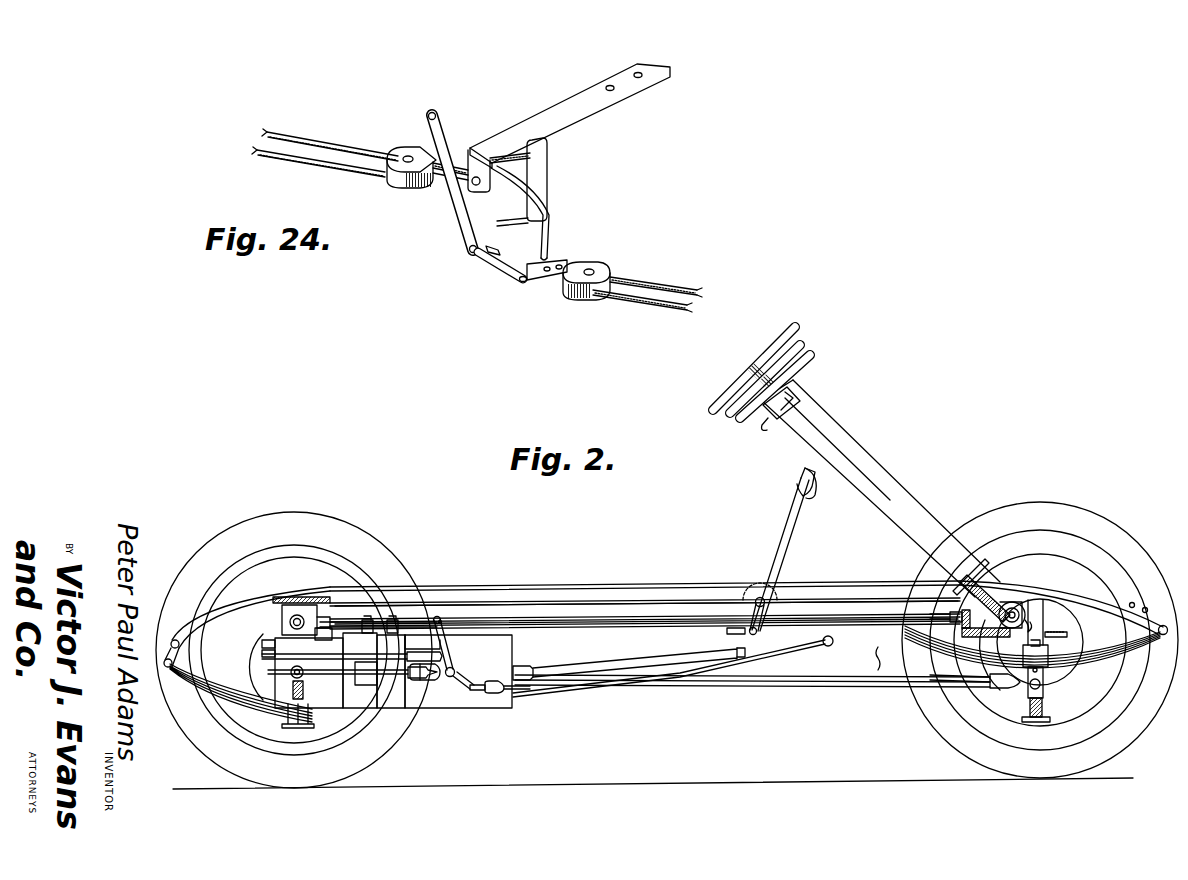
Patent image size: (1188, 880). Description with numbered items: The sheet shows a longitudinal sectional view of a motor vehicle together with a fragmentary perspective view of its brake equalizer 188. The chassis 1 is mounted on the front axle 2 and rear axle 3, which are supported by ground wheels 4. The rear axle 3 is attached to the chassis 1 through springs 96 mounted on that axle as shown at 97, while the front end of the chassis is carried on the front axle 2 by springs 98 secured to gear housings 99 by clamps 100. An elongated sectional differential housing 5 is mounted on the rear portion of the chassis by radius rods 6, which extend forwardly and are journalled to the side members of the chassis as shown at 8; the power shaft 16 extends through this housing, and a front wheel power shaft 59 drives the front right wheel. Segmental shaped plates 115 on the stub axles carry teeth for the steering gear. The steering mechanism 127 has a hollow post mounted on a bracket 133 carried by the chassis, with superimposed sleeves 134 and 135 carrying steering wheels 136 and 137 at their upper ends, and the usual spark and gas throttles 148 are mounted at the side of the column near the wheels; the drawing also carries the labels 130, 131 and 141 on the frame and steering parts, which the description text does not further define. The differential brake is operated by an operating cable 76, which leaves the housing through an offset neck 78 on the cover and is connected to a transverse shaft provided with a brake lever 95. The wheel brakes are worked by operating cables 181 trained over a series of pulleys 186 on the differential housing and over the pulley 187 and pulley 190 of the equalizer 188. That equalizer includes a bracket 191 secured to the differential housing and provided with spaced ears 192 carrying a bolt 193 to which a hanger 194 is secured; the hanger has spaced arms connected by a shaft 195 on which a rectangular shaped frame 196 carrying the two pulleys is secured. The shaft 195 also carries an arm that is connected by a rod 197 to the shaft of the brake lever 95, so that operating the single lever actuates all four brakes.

In FIG. 2, the chassis 1 is at (574, 587).
In FIG. 2, the front axle 2 is at (1044, 706).
In FIG. 2, the rear axle 3 is at (290, 688).
In FIG. 2, the ground wheels 4 is at (388, 748).
In FIG. 2, the differential housing 5 is at (478, 700).
In FIG. 2, the radius rods 6 is at (560, 694).
In FIG. 2, the journal of radius rods 8 is at (836, 646).
In FIG. 2, the power shaft 16 is at (608, 662).
In FIG. 2, the front wheel power shaft 59 is at (878, 688).
In FIG. 2, the operating cable 76 is at (834, 641).
In FIG. 2, the offset neck 78 is at (393, 619).
In FIG. 2, the brake lever 95 is at (778, 540).
In FIG. 2, the springs 96 is at (225, 708).
In FIG. 2, the spring mounting 97 is at (290, 730).
In FIG. 2, the springs 98 is at (1085, 660).
In FIG. 2, the gear housings 99 is at (1050, 691).
In FIG. 2, the clamps 100 is at (1048, 652).
In FIG. 2, the segmental shaped plates 115 is at (1060, 632).
In FIG. 2, the steering mechanism 127 is at (942, 530).
In FIG. 2, the frame bar 130 is at (675, 604).
In FIG. 2, the bearing housing 131 is at (296, 606).
In FIG. 2, the bracket 133 is at (1000, 686).
In FIG. 2, the sleeve 134 is at (1022, 604).
In FIG. 2, the sleeve 135 is at (992, 578).
In FIG. 2, the steering wheel 136 is at (798, 330).
In FIG. 2, the steering wheel 137 is at (806, 346).
In FIG. 2, the control lever 141 is at (814, 363).
In FIG. 2, the spark and gas throttles 148 is at (772, 422).
In FIG. 2, the operating cable 181 is at (881, 650).
In FIG. 2, the pulleys 186 is at (262, 656).
In FIG. 24, the pulley 187 is at (408, 146).
In FIG. 2, the pulley 187 is at (412, 672).
In FIG. 24, the brake equalizer 188 is at (552, 207).
In FIG. 24, the pulley 190 is at (598, 268).
In FIG. 2, the pulley 190 is at (498, 694).
In FIG. 24, the bracket 191 is at (640, 90).
In FIG. 2, the bracket 191 is at (438, 616).
In FIG. 24, the spaced ears 192 is at (556, 160).
In FIG. 2, the spaced ears 192 is at (447, 640).
In FIG. 24, the bolt 193 is at (510, 150).
In FIG. 24, the hanger 194 is at (548, 180).
In FIG. 24, the shaft 195 is at (500, 256).
In FIG. 24, the rectangular shaped frame 196 is at (444, 112).
In FIG. 2, the rectangular shaped frame 196 is at (462, 676).
In FIG. 2, the rod 197 is at (652, 621).